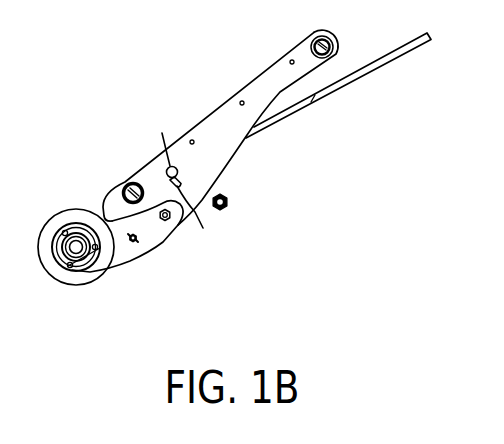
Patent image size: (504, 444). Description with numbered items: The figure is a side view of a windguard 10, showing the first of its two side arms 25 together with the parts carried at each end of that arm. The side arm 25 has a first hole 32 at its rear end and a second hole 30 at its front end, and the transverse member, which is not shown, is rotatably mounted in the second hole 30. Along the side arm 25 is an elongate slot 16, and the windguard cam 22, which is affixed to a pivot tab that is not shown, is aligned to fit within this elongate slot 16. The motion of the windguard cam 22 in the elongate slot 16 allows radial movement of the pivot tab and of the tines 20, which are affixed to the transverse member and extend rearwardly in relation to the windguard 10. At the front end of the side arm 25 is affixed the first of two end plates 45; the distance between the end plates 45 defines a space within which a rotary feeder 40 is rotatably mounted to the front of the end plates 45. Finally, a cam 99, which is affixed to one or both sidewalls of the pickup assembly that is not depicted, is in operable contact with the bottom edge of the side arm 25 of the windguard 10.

The windguard 10 is at (114, 95).
The elongate slot 16 is at (185, 234).
The tines 20 is at (349, 86).
The windguard cam 22 is at (176, 168).
The side arm 25 is at (243, 153).
The second hole 30 is at (127, 184).
The first hole 32 is at (334, 44).
The rotary feeder 40 is at (50, 219).
The end plate 45 is at (109, 253).
The cam 99 is at (228, 205).